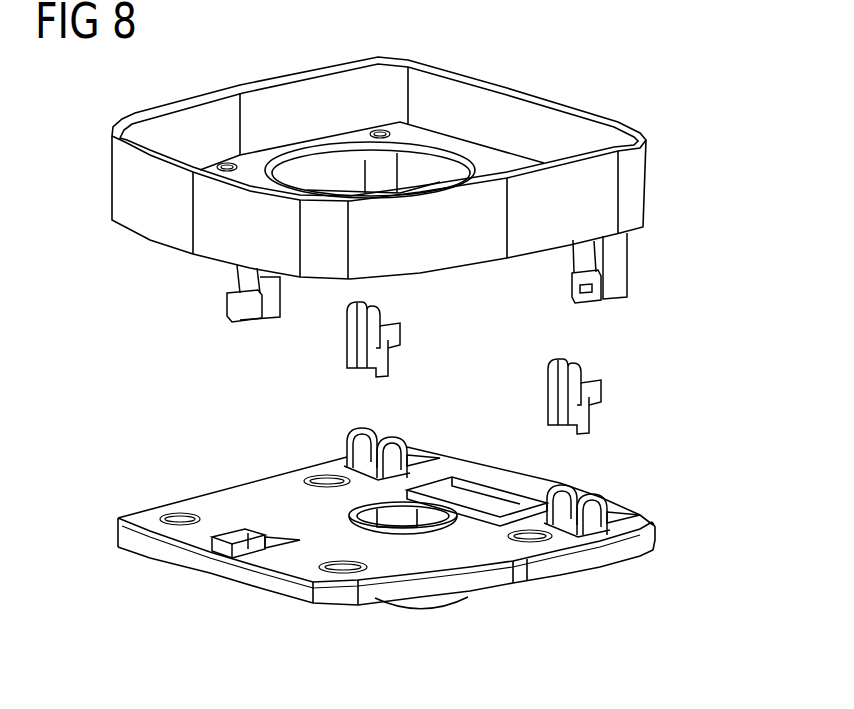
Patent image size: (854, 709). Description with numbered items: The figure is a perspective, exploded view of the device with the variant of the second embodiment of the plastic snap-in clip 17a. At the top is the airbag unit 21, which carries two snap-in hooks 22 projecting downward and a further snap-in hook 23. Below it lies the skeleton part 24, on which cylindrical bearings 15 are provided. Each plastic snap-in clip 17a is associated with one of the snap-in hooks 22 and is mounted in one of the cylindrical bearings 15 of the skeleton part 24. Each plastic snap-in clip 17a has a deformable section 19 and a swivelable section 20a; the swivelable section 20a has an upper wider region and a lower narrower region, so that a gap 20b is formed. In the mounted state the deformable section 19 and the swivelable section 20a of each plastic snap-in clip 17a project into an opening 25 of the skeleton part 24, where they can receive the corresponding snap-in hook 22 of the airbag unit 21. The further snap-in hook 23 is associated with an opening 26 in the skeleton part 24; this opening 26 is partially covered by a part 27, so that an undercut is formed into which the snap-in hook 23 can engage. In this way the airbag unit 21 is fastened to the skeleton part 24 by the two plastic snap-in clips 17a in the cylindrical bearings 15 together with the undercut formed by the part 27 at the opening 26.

The airbag unit 21 is at (533, 117).
The snap-in hook 22 is at (380, 183).
The snap-in hook 23 is at (263, 307).
The plastic snap-in clip 17a is at (412, 326).
The deformable section 19 is at (353, 337).
The swivelable section 20a is at (390, 343).
The gap 20b is at (392, 367).
The skeleton part 24 is at (467, 552).
The cylindrical bearing 15 is at (372, 445).
The opening 25 is at (347, 457).
The opening 26 is at (273, 537).
The part 27 is at (230, 547).